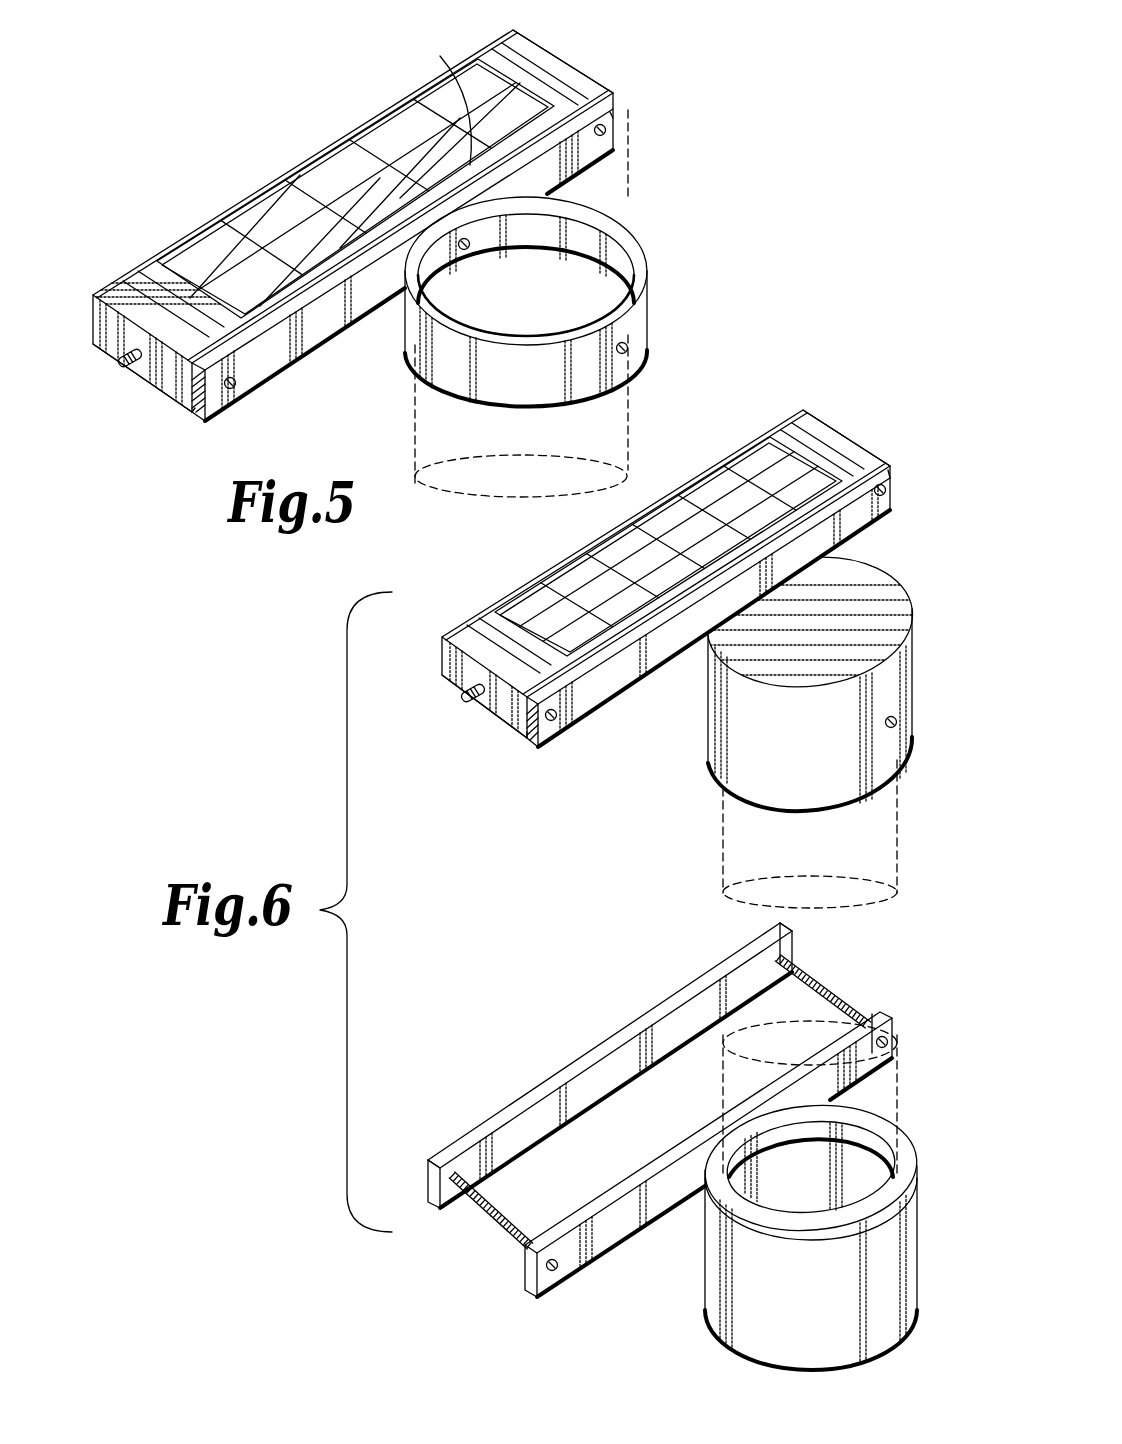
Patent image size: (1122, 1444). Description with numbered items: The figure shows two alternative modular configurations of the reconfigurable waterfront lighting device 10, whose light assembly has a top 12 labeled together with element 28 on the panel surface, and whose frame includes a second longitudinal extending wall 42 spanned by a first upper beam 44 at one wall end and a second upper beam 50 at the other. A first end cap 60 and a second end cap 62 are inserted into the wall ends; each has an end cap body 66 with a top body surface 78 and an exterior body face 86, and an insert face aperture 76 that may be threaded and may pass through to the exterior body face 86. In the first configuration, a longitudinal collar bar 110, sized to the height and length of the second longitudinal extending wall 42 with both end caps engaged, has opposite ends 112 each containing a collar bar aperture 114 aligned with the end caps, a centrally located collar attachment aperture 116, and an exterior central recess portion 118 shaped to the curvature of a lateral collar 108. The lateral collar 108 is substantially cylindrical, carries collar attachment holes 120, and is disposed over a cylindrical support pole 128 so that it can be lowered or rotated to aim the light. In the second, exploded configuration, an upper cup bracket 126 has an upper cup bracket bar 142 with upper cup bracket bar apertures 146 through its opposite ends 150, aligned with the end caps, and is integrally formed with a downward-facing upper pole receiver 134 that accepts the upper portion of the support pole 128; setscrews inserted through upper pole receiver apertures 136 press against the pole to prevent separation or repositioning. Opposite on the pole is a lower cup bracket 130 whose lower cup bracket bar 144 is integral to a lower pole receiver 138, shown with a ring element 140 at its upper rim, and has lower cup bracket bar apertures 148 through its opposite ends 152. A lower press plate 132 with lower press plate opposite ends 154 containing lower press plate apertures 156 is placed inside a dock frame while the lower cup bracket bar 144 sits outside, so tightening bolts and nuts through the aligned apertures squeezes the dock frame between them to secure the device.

In FIG. 5, the reconfigurable waterfront lighting device 10 is at (265, 143).
In FIG. 6, the reconfigurable waterfront lighting device 10 is at (338, 713).
In FIG. 5, the top 12 is at (355, 188).
In FIG. 6, the top 12 is at (668, 546).
In FIG. 5, the top cover 28 is at (312, 172).
In FIG. 6, the top cover 28 is at (697, 505).
In FIG. 5, the second longitudinal extending wall 42 is at (263, 185).
In FIG. 6, the second longitudinal extending wall 42 is at (610, 532).
In FIG. 5, the first upper beam 44 is at (153, 259).
In FIG. 6, the first upper beam 44 is at (514, 634).
In FIG. 5, the second upper beam 50 is at (523, 77).
In FIG. 6, the second upper beam 50 is at (813, 447).
In FIG. 5, the first end cap 60 is at (95, 342).
In FIG. 6, the first end cap 60 is at (450, 678).
In FIG. 5, the second end cap 62 is at (592, 70).
In FIG. 6, the second end cap 62 is at (840, 433).
In FIG. 5, the end cap body 66 is at (166, 309).
In FIG. 6, the end cap body 66 is at (503, 649).
In FIG. 5, the insert face aperture 76 is at (125, 363).
In FIG. 6, the insert face aperture 76 is at (466, 699).
In FIG. 5, the top body surface 78 is at (110, 282).
In FIG. 6, the top body surface 78 is at (462, 640).
In FIG. 5, the exterior body face 86 is at (170, 378).
In FIG. 6, the exterior body face 86 is at (503, 710).
In FIG. 5, the lateral collar 108 is at (653, 269).
In FIG. 5, the longitudinal collar bar 110 is at (332, 315).
In FIG. 5, the opposite ends 112 is at (614, 118).
In FIG. 5, the collar bar aperture 114 is at (607, 137).
In FIG. 5, the collar attachment aperture 116 is at (468, 258).
In FIG. 5, the exterior central recess portion 118 is at (463, 70).
In FIG. 5, the collar attachment holes 120 is at (632, 346).
In FIG. 6, the upper cup bracket 126 is at (858, 545).
In FIG. 5, the support pole 128 is at (613, 200).
In FIG. 6, the support pole 128 is at (752, 828).
In FIG. 6, the lower cup bracket 130 is at (611, 1273).
In FIG. 6, the lower press plate 132 is at (587, 1087).
In FIG. 6, the upper pole receiver 134 is at (745, 703).
In FIG. 6, the upper pole receiver apertures 136 is at (885, 722).
In FIG. 6, the lower pole receiver 138 is at (718, 1285).
In FIG. 6, the collar ring 140 is at (750, 1356).
In FIG. 6, the upper cup bracket bar 142 is at (620, 657).
In FIG. 6, the lower cup bracket bar 144 is at (640, 1215).
In FIG. 6, the upper cup bracket bar apertures 146 is at (887, 492).
In FIG. 6, the lower cup bracket bar apertures 148 is at (876, 1047).
In FIG. 6, the opposite ends 150 is at (889, 478).
In FIG. 6, the opposite ends 152 is at (892, 1027).
In FIG. 6, the lower press plate opposite ends 154 is at (793, 945).
In FIG. 6, the lower press plate apertures 156 is at (775, 960).